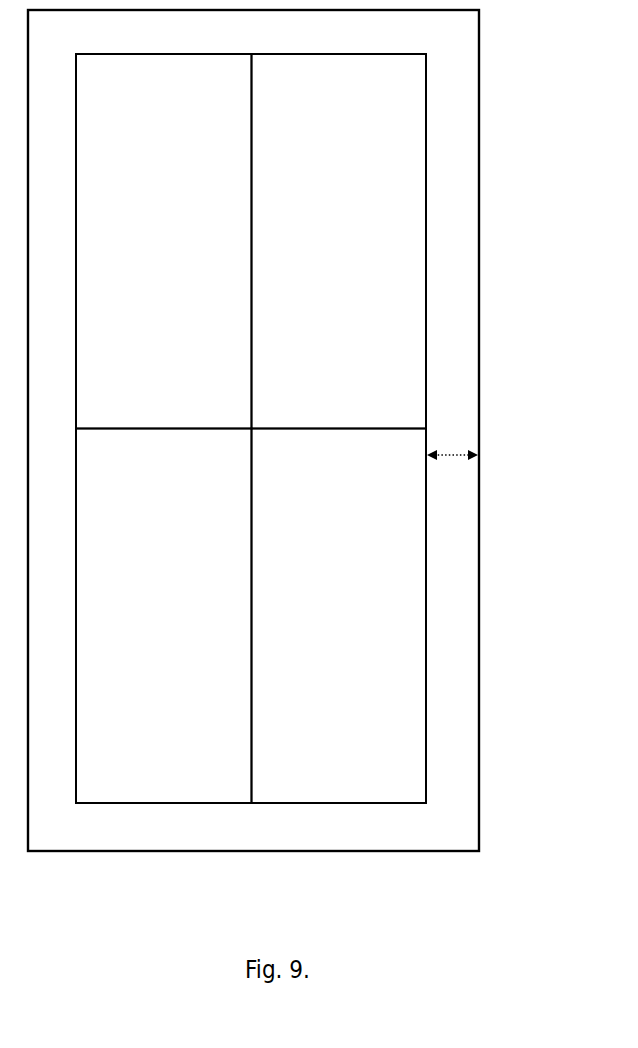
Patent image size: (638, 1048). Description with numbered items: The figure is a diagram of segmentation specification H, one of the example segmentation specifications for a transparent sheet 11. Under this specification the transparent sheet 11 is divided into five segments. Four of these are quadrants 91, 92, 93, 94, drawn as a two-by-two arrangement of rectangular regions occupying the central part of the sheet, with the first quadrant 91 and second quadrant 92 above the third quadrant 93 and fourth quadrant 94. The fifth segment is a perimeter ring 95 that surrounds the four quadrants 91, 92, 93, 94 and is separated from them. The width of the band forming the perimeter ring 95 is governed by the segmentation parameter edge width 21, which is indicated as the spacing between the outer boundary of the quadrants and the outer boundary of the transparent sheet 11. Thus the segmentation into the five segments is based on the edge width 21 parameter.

The transparent sheet 11 is at (496, 212).
The edge width 21 is at (452, 479).
The first quadrant 91 is at (164, 241).
The second quadrant 92 is at (339, 241).
The third quadrant 93 is at (164, 616).
The fourth quadrant 94 is at (339, 616).
The perimeter ring 95 is at (271, 448).